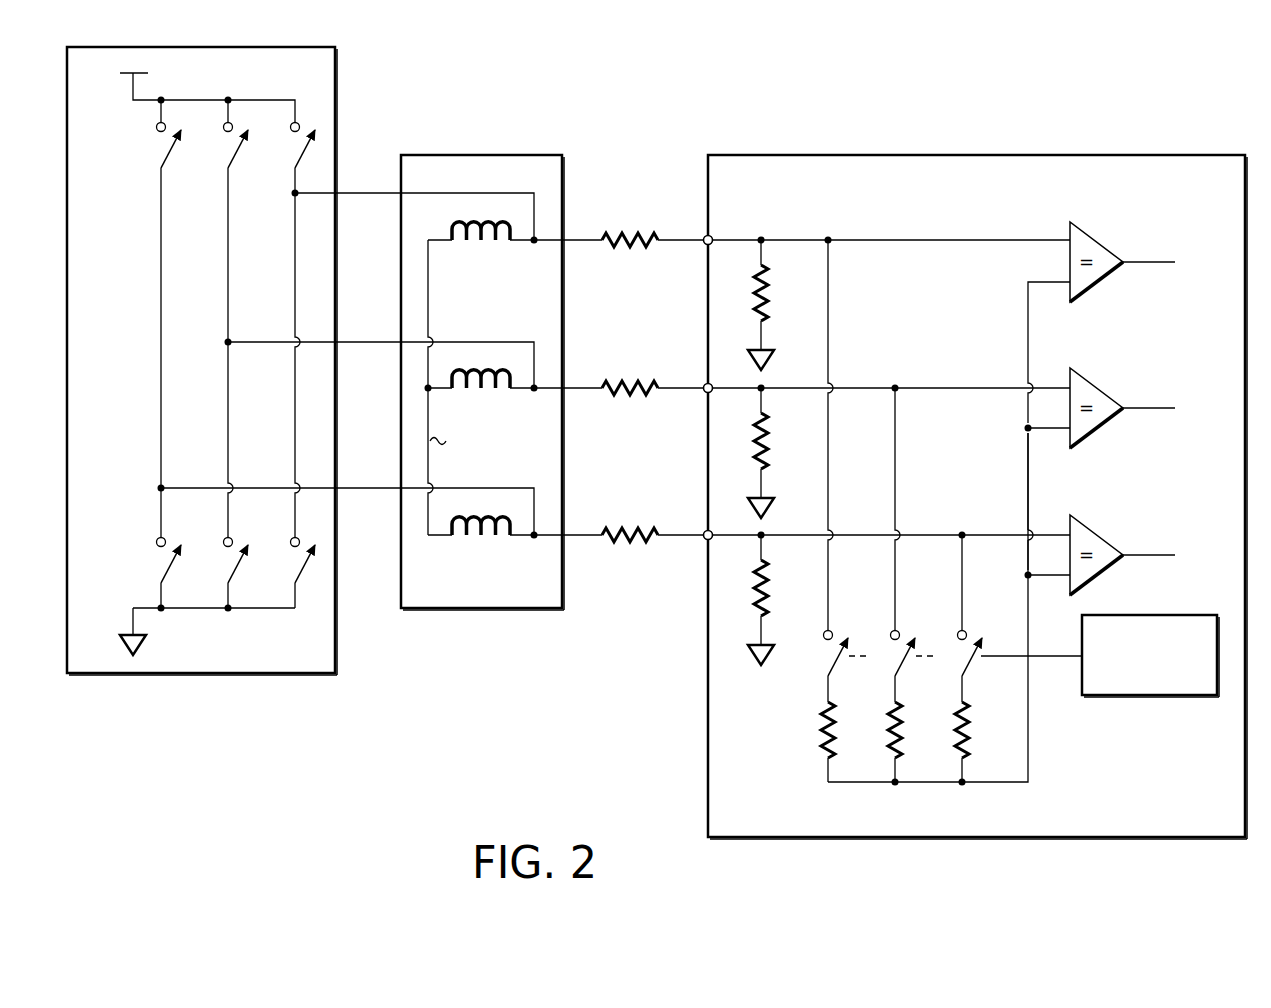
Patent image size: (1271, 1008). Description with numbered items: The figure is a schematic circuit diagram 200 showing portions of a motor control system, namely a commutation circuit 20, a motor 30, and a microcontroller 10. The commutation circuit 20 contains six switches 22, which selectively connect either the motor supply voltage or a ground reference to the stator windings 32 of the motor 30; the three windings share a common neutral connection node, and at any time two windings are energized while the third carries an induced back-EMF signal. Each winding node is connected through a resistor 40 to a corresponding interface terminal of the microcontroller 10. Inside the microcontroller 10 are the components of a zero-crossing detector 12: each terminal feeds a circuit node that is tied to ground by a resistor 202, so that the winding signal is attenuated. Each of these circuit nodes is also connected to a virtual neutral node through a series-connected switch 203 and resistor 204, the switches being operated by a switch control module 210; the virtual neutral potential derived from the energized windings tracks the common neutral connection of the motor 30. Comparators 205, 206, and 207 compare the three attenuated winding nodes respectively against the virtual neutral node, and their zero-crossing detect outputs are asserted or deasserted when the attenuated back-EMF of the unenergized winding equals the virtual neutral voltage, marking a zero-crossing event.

The schematic circuit diagram 200 is at (540, 795).
The commutation circuit 20 is at (309, 664).
The switches 22 is at (148, 185).
The motor 30 is at (533, 596).
The stator windings 32 is at (467, 552).
The resistor 40 is at (630, 554).
The microcontroller 10 is at (1215, 807).
The zero-crossing detector 12 is at (1062, 745).
The resistors 202 is at (766, 224).
The switches 203 is at (800, 661).
The resistors 204 is at (806, 737).
The comparator 205 is at (1101, 238).
The comparator 206 is at (1101, 384).
The comparator 207 is at (1101, 531).
The switch control module 210 is at (1180, 695).